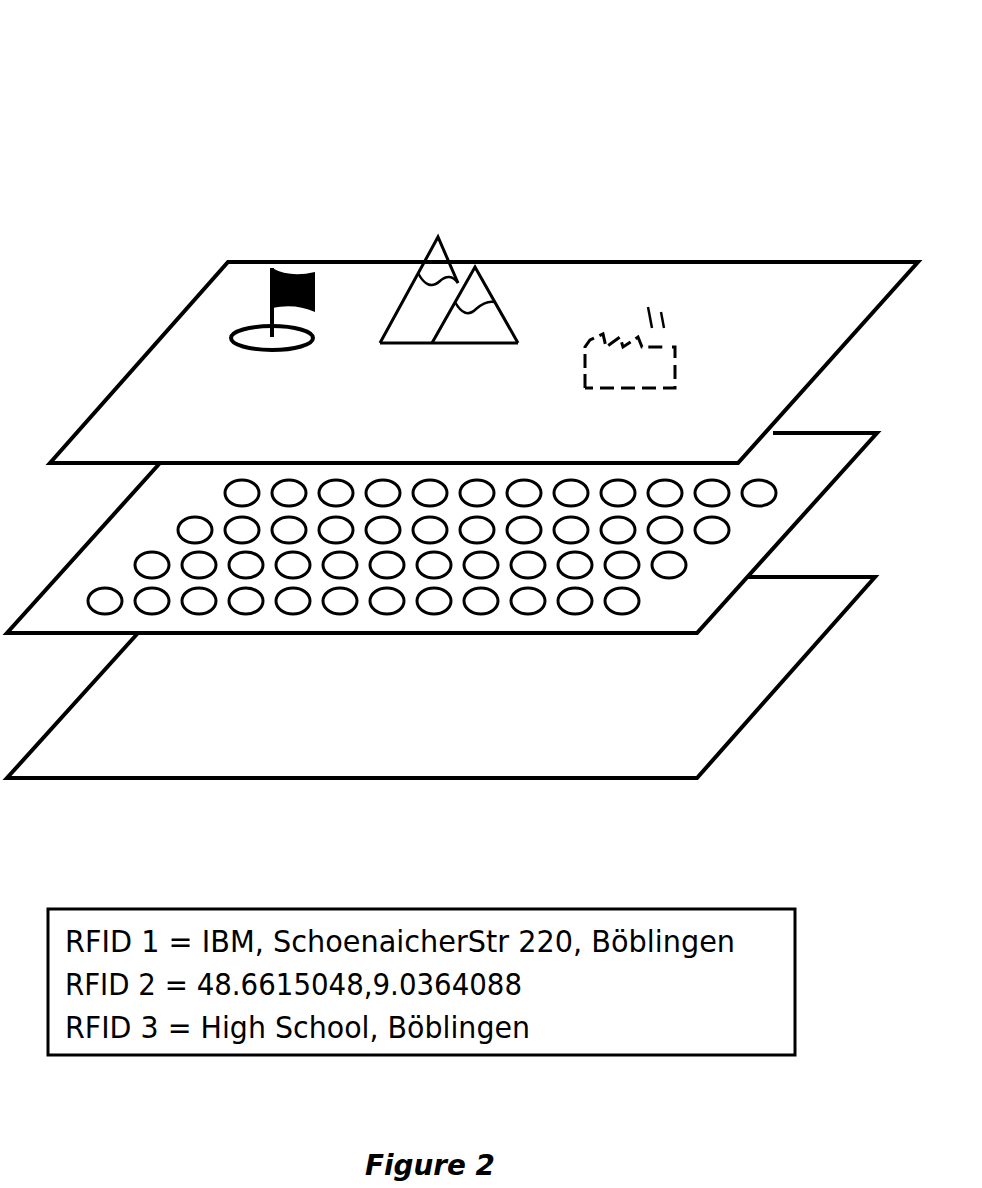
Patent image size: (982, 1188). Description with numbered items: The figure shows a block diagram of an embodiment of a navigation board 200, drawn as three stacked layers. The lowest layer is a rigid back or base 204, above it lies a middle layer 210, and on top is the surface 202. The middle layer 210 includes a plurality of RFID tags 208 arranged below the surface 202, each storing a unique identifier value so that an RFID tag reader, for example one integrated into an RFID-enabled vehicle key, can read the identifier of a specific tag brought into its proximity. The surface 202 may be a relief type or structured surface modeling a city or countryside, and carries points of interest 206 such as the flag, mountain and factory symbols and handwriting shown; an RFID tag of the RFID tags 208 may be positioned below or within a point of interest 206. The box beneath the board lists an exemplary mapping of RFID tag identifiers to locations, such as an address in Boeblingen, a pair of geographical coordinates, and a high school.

The navigation board 200 is at (160, 70).
The surface 202 is at (828, 308).
The rigid back or base 204 is at (663, 763).
The point of interest 206 is at (616, 305).
The RFID tags 208 is at (152, 619).
The middle layer 210 is at (93, 530).